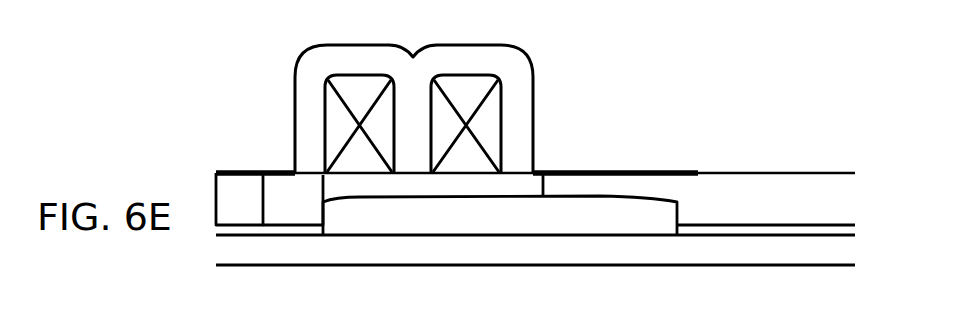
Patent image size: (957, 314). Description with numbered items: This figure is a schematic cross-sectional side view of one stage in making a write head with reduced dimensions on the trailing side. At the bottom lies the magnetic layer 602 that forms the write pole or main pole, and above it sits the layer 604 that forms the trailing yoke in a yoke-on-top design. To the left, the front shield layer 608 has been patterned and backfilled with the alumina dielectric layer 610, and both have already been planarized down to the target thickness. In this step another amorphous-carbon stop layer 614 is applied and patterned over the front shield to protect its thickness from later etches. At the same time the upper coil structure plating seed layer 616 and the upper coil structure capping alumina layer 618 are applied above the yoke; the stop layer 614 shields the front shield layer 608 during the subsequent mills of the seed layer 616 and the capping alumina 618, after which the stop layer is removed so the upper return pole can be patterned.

The magnetic layer 602 is at (452, 261).
The layer 604 is at (519, 221).
The front shield layer 608 is at (258, 210).
The dielectric layer 610 is at (310, 210).
The stop layer 614 is at (272, 170).
The upper coil structure plating seed layer 616 is at (502, 132).
The upper coil structure capping alumina layer 618 is at (534, 72).